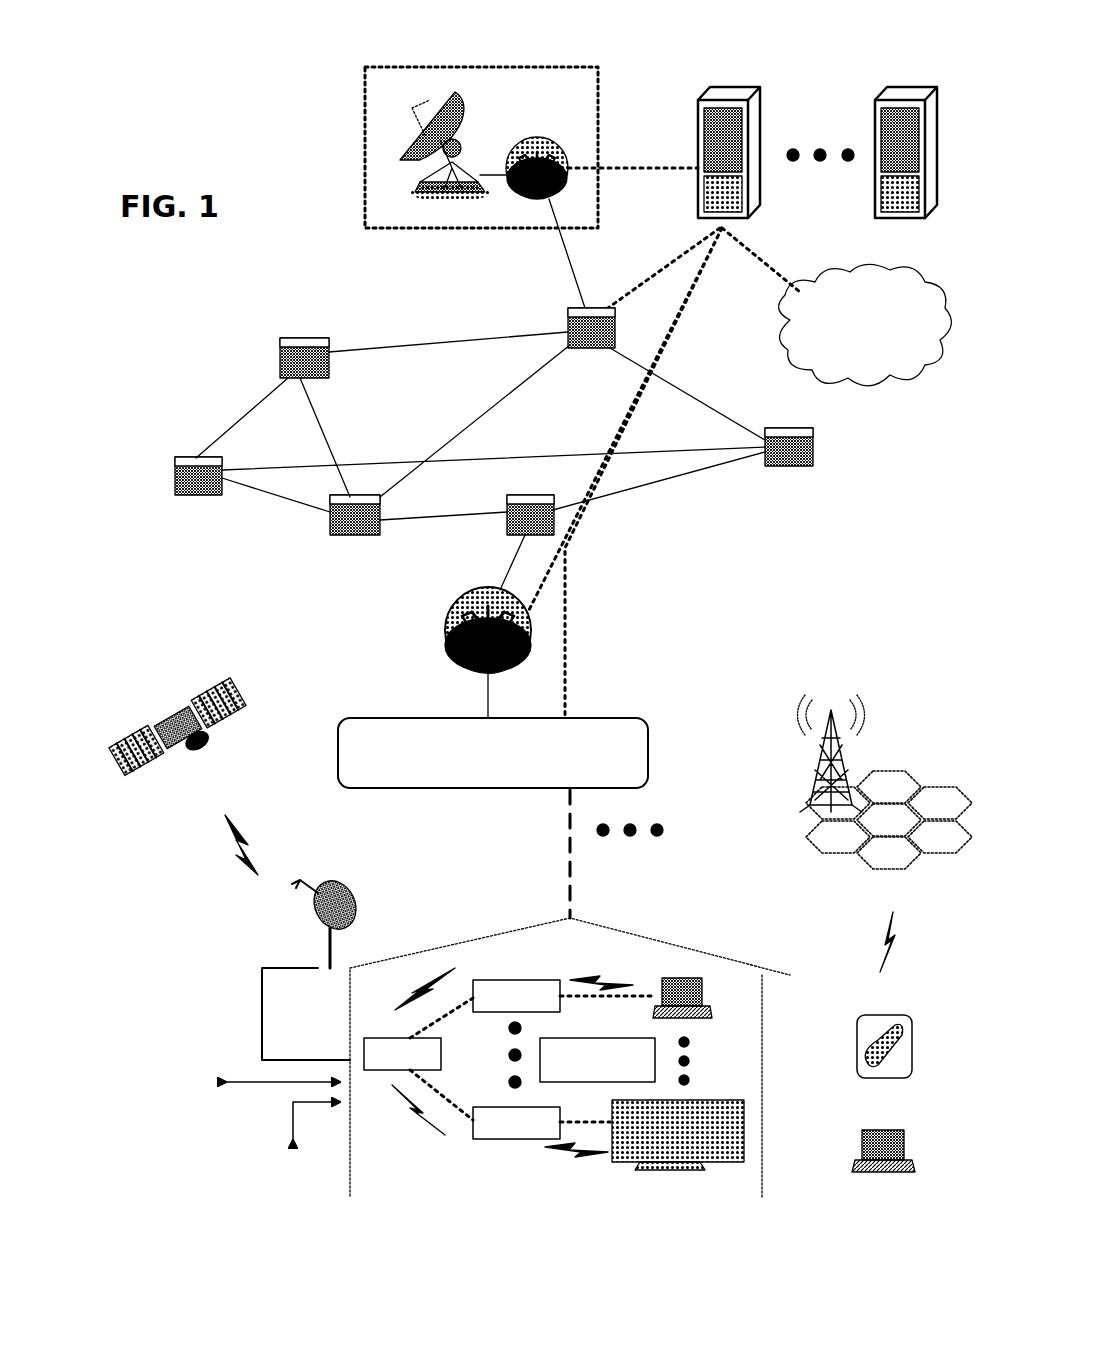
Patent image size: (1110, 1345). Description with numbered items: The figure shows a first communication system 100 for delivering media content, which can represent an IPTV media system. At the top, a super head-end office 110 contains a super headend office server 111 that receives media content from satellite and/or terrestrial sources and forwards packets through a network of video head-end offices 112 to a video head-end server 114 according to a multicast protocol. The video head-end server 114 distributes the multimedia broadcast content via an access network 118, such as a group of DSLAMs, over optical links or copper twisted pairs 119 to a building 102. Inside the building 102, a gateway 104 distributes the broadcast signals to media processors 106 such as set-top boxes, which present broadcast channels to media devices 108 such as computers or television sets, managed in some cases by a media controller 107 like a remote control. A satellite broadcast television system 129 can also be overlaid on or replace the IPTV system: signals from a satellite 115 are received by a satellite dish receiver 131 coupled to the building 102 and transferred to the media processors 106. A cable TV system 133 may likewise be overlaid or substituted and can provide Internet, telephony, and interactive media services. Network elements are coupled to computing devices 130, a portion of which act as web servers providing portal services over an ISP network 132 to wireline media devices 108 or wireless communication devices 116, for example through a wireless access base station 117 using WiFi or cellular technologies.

The communication system 100 is at (189, 171).
The super head-end office 110 is at (362, 158).
The super headend office server 111 is at (516, 152).
The video head-end offices 112 is at (175, 478).
The video head-end server 114 is at (448, 638).
The satellite 115 is at (112, 752).
The wireless communication devices 116 is at (912, 1032).
The wireless access base station 117 is at (883, 775).
The access network 118 is at (650, 748).
The optical links or copper twisted pairs 119 is at (565, 886).
The satellite broadcast television system 129 is at (252, 795).
The computing devices 130 is at (903, 98).
The satellite dish receiver 131 is at (248, 966).
The ISP network 132 is at (842, 373).
The cable TV system 133 is at (275, 1217).
The buildings 102 is at (572, 1214).
The gateway 104 is at (430, 1066).
The media processors 106 is at (558, 1008).
The media controller 107 is at (642, 1072).
The media devices 108 is at (688, 978).